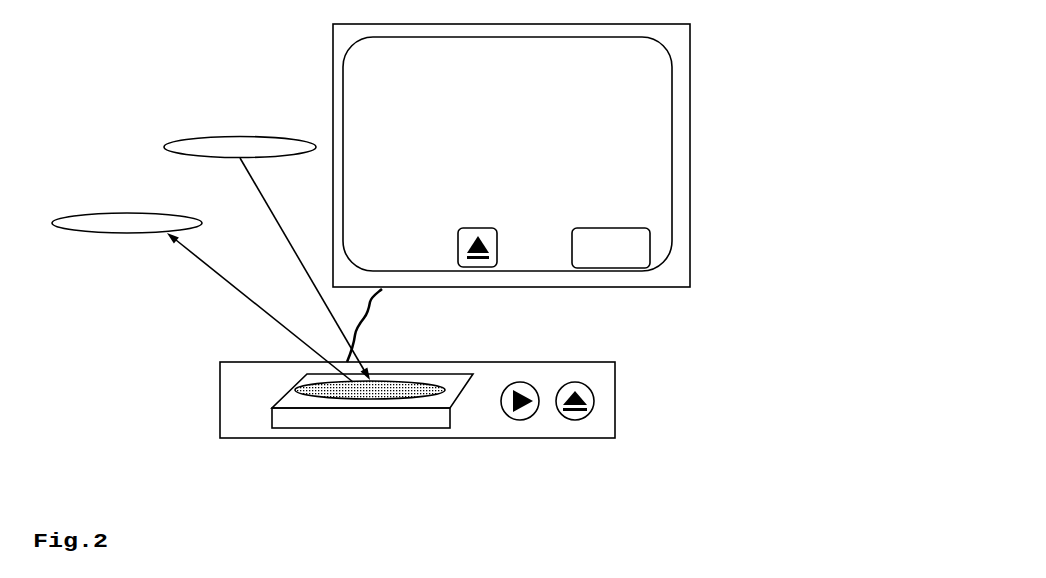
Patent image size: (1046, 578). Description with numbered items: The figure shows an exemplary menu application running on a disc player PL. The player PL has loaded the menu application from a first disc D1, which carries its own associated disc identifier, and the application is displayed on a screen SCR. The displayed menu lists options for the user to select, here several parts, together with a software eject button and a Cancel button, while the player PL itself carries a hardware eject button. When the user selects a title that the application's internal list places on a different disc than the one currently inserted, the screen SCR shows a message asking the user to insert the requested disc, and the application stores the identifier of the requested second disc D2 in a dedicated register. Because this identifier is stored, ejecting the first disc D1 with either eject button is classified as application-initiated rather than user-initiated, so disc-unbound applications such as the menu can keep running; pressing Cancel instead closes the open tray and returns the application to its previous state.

The screen SCR is at (690, 157).
The disc player PL is at (240, 382).
The first disc D1 is at (191, 297).
The second disc D2 is at (266, 228).